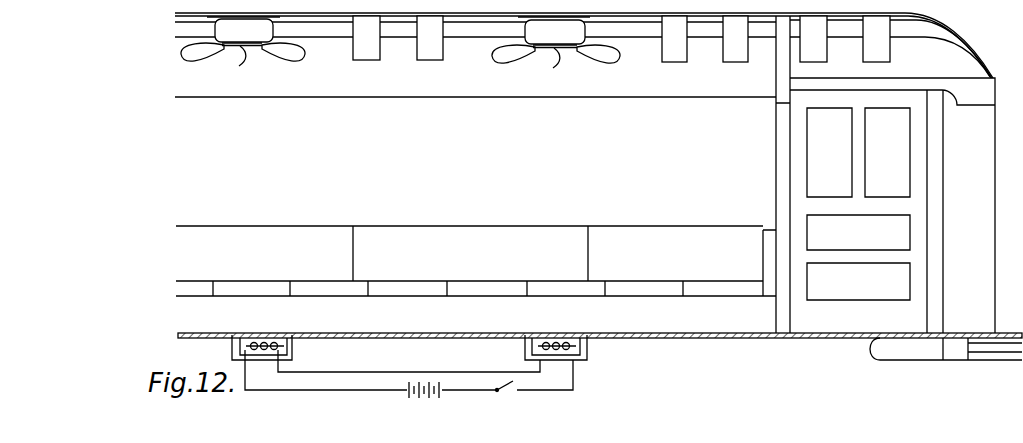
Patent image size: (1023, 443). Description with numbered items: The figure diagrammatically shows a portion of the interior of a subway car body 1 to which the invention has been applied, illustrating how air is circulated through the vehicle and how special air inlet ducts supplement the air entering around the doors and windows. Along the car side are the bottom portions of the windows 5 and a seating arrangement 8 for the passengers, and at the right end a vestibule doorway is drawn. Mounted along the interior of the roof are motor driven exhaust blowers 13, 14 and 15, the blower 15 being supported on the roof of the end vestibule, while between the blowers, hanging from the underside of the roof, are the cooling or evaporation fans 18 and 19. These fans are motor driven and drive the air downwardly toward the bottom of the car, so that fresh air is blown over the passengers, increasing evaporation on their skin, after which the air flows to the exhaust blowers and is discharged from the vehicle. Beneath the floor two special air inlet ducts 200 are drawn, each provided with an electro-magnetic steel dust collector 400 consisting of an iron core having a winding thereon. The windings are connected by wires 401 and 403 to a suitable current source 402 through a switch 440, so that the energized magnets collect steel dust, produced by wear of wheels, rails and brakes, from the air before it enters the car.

The car body 1 is at (992, 121).
The bottom portions of the windows 5 is at (829, 334).
The seating arrangement 8 is at (650, 297).
The motor driven exhaust blower 13 is at (398, 38).
The motor driven exhaust blower 14 is at (705, 39).
The motor driven exhaust blower 15 is at (845, 39).
The cooling or evaporation fan 18 is at (243, 41).
The cooling or evaporation fan 19 is at (556, 42).
The special air inlet duct 200 is at (294, 351).
The electro-magnetic steel dust collector 400 is at (268, 335).
The wire 401 is at (396, 372).
The current source 402 is at (428, 392).
The wire 403 is at (372, 391).
The switch 440 is at (503, 391).